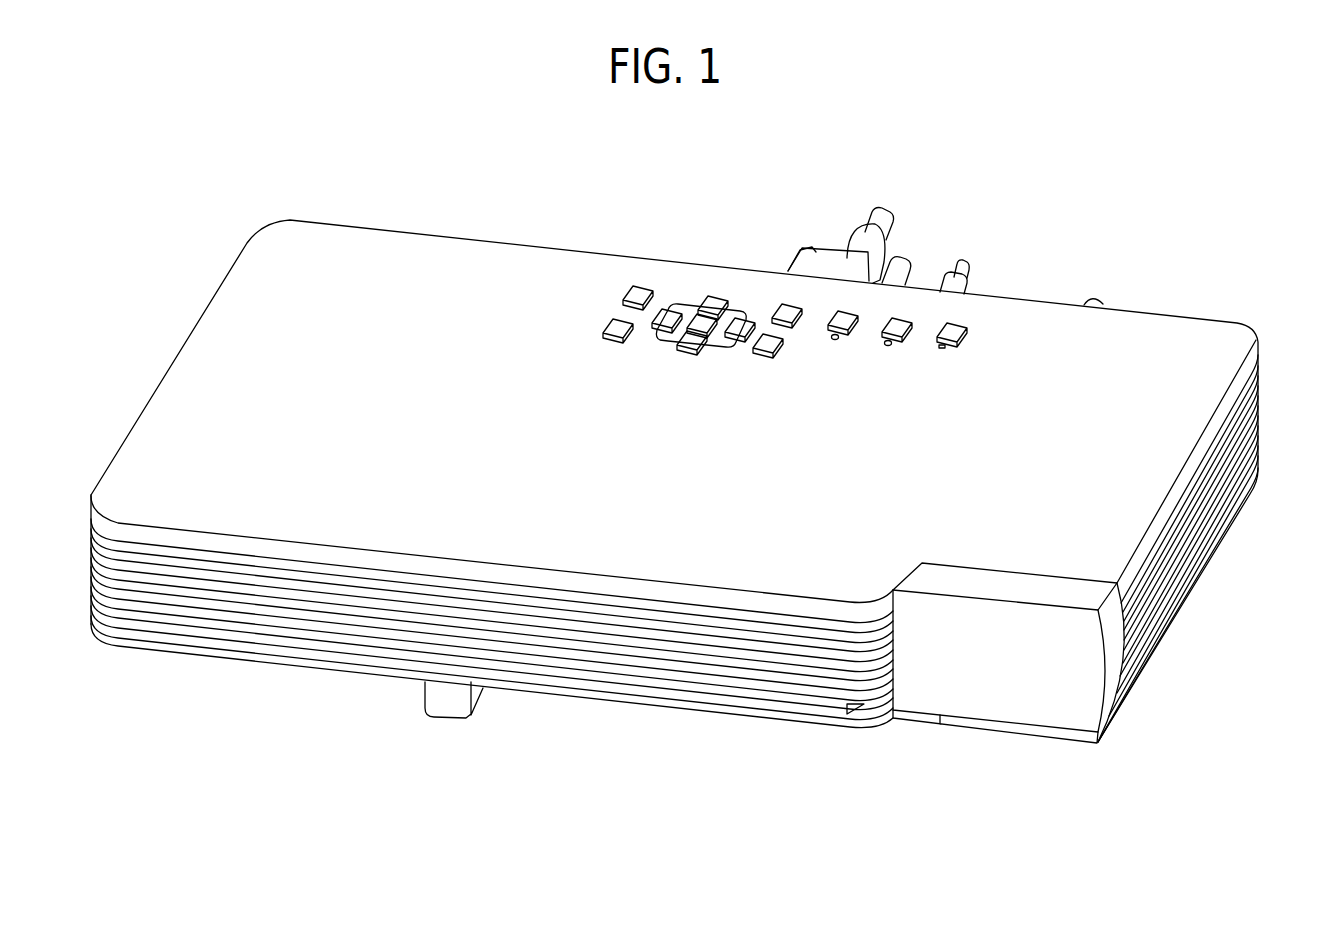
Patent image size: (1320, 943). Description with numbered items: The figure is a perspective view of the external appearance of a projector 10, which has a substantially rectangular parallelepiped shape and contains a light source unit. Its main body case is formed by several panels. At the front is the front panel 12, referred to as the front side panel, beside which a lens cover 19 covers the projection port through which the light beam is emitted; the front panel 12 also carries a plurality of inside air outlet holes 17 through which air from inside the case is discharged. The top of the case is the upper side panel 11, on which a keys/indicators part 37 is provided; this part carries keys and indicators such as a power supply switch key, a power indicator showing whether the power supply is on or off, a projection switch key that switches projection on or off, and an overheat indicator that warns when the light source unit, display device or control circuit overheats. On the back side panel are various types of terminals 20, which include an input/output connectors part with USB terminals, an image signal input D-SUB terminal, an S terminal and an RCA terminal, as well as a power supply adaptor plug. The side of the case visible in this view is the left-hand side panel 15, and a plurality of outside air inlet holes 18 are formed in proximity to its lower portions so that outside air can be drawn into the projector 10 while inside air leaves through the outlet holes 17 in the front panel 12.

The projector 10 is at (628, 197).
The upper side panel 11 is at (435, 268).
The front panel 12 is at (578, 680).
The left-hand side panel 15 is at (1187, 583).
The inside air outlet holes 17 is at (670, 688).
The outside air inlet holes 18 is at (1227, 490).
The lens cover 19 is at (1027, 700).
The terminals 20 is at (912, 238).
The keys/indicators part 37 is at (713, 281).